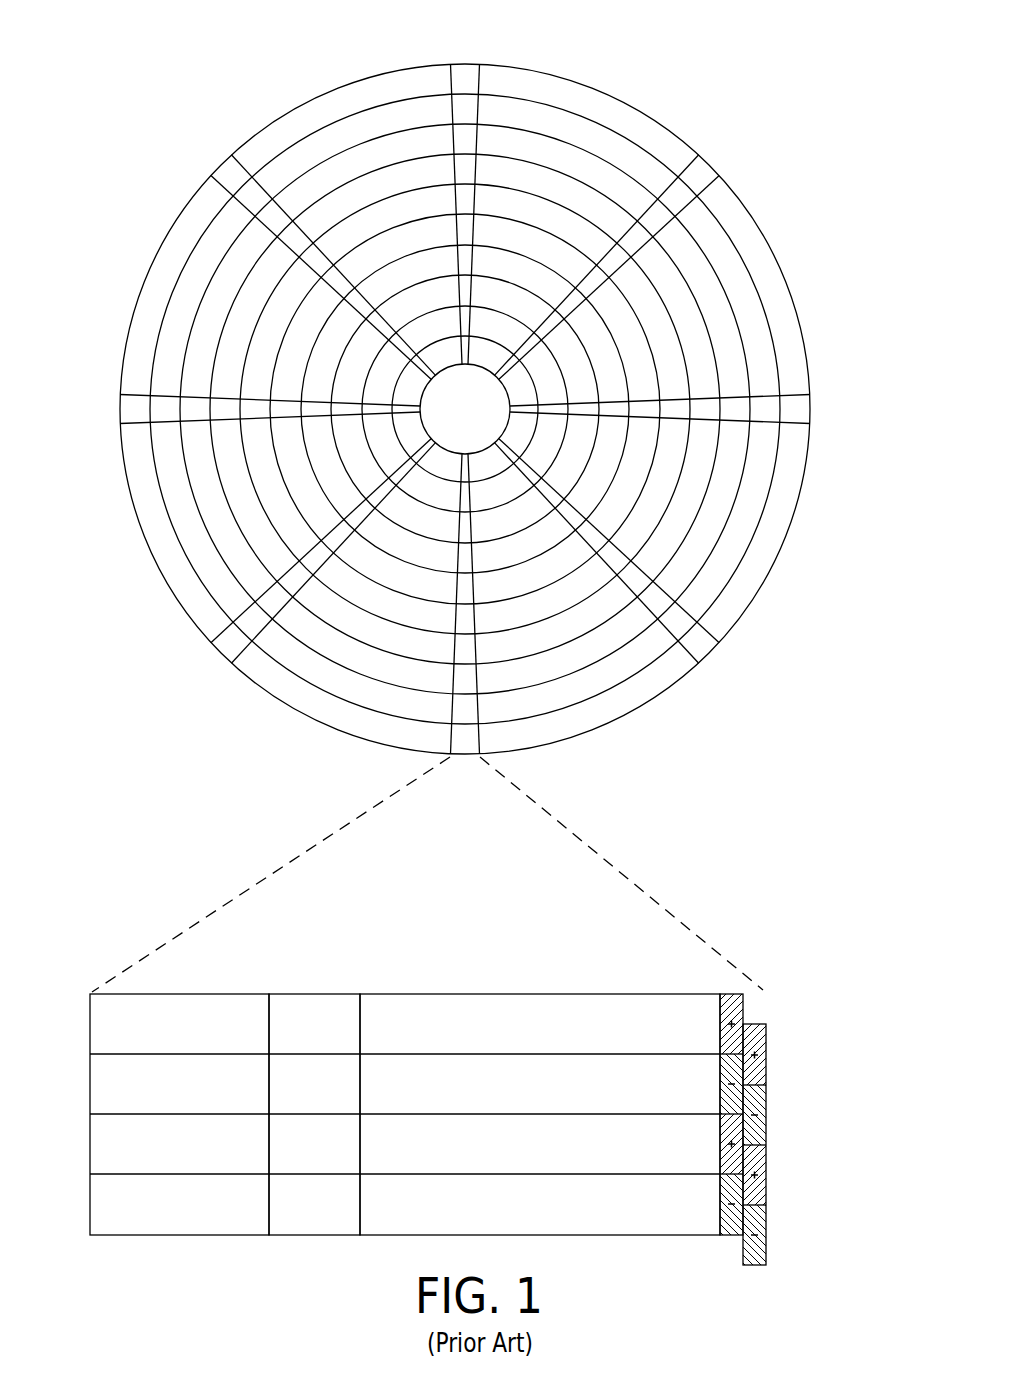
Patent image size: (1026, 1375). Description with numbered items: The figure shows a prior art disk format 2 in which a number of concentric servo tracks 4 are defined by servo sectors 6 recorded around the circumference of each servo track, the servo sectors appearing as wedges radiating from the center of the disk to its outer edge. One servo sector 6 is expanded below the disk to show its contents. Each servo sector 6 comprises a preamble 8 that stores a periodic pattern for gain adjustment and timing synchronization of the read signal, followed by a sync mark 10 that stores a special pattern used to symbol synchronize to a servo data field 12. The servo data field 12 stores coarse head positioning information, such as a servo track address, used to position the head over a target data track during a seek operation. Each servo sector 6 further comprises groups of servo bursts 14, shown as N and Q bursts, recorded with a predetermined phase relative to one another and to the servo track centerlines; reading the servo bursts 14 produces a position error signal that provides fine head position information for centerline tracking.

The disk format 2 is at (200, 62).
The servo track 4 is at (583, 135).
The servo sector 6 is at (466, 74).
The preamble 8 is at (190, 994).
The sync mark 10 is at (315, 994).
The servo data field 12 is at (527, 994).
The servo bursts 14 is at (770, 985).